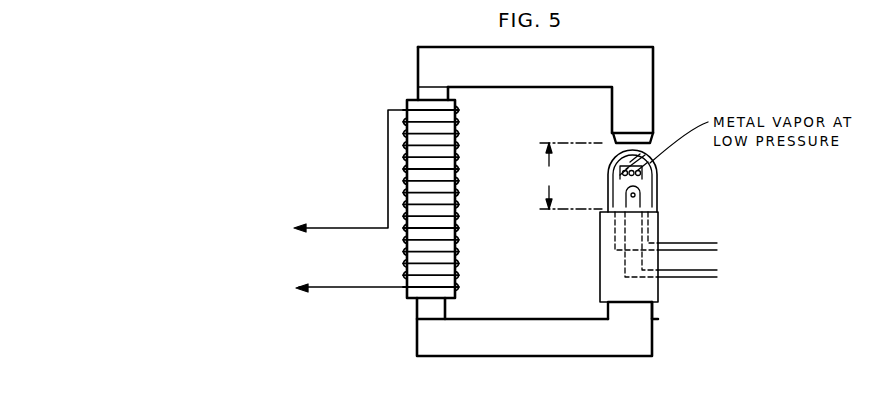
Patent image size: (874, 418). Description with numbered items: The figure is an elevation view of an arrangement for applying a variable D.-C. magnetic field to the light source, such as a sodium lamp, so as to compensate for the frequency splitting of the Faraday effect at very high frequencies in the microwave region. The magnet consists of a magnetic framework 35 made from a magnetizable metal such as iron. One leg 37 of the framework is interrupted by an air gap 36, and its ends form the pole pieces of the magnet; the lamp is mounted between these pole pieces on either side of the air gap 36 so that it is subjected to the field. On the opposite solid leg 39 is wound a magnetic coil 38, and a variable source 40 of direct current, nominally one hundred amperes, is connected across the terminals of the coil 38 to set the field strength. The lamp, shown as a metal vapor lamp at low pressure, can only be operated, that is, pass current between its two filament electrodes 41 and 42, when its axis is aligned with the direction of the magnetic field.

The magnetic framework 35 is at (423, 62).
The air gap 36 is at (571, 176).
The leg 37 is at (645, 123).
The magnetic coil 38 is at (432, 200).
The solid leg 39 is at (430, 310).
The variable source of direct current 40 is at (332, 201).
The filament electrode 41 is at (646, 167).
The filament electrode 42 is at (641, 191).